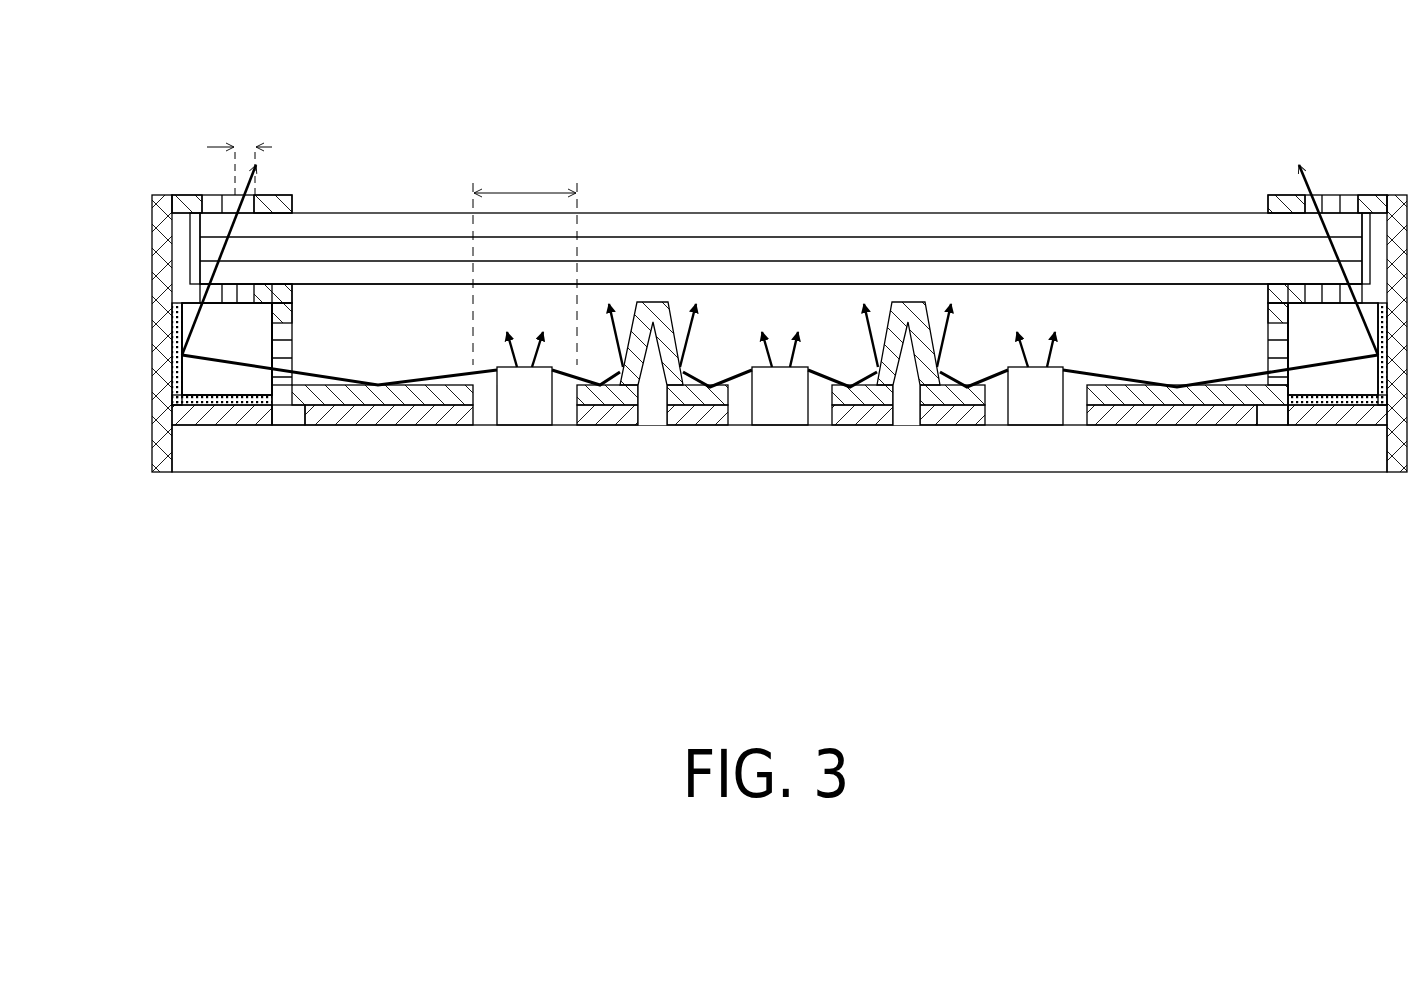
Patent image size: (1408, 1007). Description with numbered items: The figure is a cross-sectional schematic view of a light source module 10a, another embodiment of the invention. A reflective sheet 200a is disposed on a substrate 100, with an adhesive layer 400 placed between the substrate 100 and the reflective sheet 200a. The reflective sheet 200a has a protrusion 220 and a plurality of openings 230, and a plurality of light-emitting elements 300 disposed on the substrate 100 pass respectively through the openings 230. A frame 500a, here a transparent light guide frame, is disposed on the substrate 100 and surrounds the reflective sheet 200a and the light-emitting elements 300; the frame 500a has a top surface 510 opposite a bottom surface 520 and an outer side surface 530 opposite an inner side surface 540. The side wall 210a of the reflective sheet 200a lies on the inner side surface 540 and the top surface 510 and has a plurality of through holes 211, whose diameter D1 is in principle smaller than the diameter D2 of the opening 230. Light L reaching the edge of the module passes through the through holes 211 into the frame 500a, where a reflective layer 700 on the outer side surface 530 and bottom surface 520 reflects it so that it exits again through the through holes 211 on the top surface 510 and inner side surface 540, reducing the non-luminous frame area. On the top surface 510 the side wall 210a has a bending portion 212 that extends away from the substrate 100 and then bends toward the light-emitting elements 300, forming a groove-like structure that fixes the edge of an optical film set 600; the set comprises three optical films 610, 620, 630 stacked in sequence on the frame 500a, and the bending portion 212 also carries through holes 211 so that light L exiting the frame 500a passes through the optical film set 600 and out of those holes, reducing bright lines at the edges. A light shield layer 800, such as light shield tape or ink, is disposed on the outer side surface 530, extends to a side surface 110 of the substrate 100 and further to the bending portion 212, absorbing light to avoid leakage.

The light source module 10a is at (90, 80).
The side surface of the substrate 110 is at (166, 455).
The substrate 100 is at (432, 445).
The bending portion 212 is at (172, 203).
The through holes 211 is at (212, 196).
The light shield layer 800 is at (190, 246).
The optical film set 600 is at (677, 145).
The optical film 630 is at (708, 230).
The optical film 620 is at (762, 250).
The optical film 610 is at (812, 273).
The top surface 510 is at (228, 318).
The frame 500a is at (233, 378).
The inner side surface 540 is at (262, 380).
The outer side surface 530 is at (176, 360).
The reflective layer 700 is at (207, 393).
The bottom surface 520 is at (176, 417).
The side wall 210a is at (287, 382).
The reflective sheet 200a is at (355, 393).
The opening 230 is at (486, 404).
The light-emitting elements 300 is at (526, 400).
The adhesive layer 400 is at (606, 412).
The protrusion 220 is at (653, 322).
The light L is at (738, 375).
The diameter of the through hole D1 is at (239, 153).
The diameter of the opening D2 is at (525, 265).